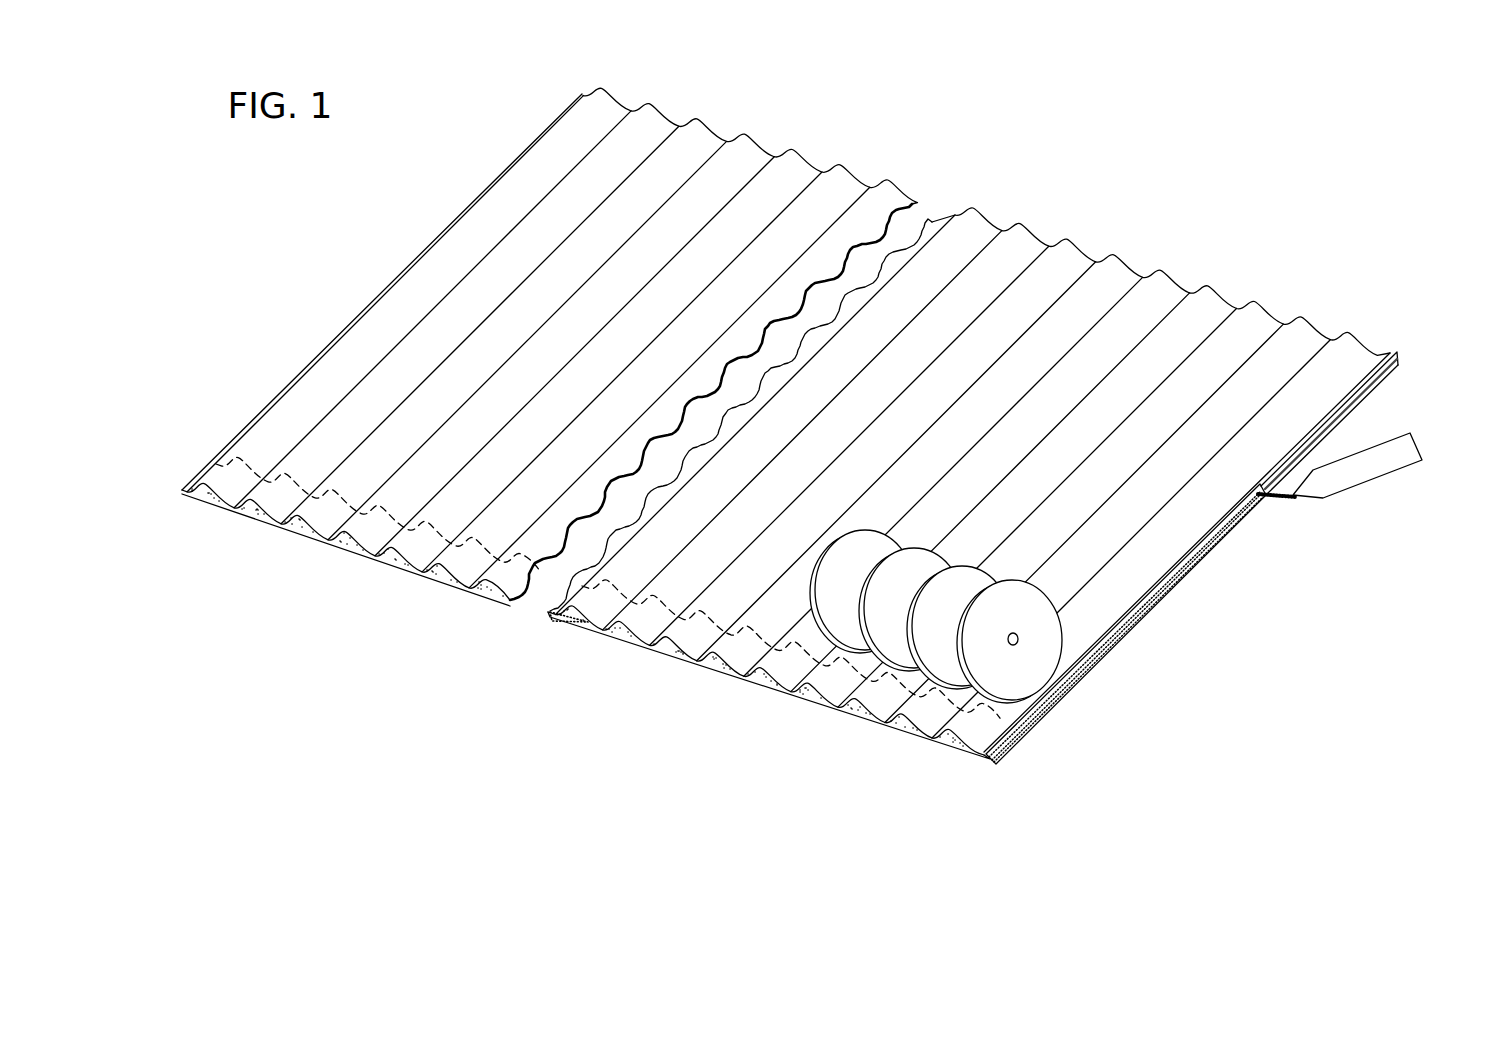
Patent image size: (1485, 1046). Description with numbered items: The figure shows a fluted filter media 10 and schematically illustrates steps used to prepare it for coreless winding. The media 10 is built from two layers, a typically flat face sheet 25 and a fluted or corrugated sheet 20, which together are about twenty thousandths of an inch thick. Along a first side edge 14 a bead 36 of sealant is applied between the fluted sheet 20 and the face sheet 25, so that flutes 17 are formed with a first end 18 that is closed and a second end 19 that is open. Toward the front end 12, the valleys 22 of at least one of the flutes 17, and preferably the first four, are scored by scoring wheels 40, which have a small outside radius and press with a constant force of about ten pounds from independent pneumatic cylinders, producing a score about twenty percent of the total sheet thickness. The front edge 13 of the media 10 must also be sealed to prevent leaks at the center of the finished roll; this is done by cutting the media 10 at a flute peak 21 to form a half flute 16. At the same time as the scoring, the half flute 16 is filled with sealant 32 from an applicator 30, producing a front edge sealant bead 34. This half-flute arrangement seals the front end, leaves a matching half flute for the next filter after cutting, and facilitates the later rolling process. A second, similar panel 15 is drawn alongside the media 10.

The fluted filter media 10 is at (1002, 469).
The front end 12 is at (1370, 352).
The front edge 13 is at (1377, 390).
The first side edge 14 is at (640, 643).
The second corrugated panel 15 is at (768, 147).
The half flute 16 is at (987, 760).
The flutes 17 is at (473, 525).
The first end 18 is at (485, 575).
The second end 19 is at (703, 119).
The fluted sheet 20 is at (1397, 355).
The flute peak 21 is at (838, 237).
The valleys 22 is at (1287, 375).
The face sheet 25 is at (1353, 412).
The applicator 30 is at (1382, 478).
The sealant 32 is at (1273, 498).
The front edge sealant bead 34 is at (1153, 602).
The bead of sealant 36 is at (205, 495).
The scoring wheels 40 is at (987, 693).